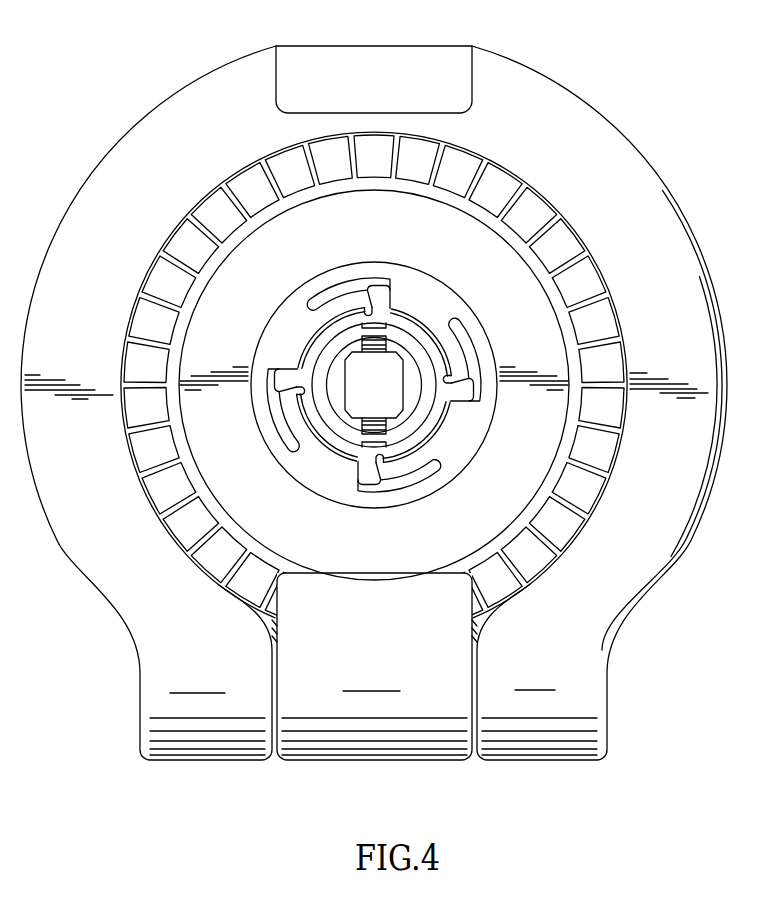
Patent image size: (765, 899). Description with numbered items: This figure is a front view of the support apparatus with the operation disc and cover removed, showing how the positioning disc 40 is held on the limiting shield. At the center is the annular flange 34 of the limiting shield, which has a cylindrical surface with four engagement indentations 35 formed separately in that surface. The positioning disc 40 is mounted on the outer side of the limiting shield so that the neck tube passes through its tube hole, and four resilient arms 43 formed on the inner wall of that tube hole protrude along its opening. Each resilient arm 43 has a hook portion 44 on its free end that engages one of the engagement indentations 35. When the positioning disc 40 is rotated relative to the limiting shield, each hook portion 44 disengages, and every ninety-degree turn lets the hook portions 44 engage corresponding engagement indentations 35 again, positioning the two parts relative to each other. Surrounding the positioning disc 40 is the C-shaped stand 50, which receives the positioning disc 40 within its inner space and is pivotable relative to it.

The annular flange 34 is at (420, 435).
The engagement indentation 35 is at (370, 314).
The positioning disc 40 is at (550, 357).
The resilient arm 43 is at (340, 310).
The hook portion 44 is at (388, 303).
The stand 50 is at (593, 152).